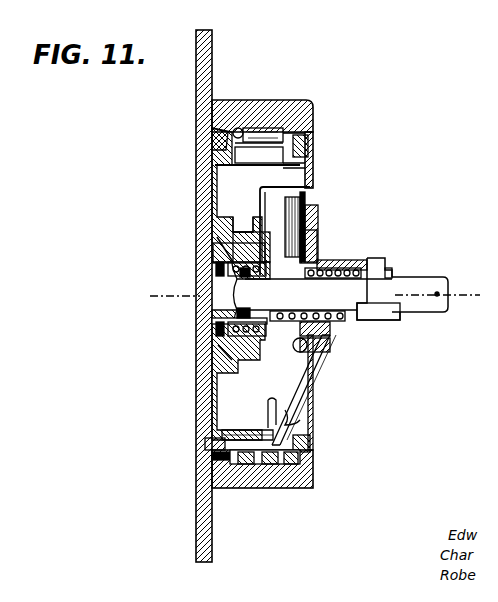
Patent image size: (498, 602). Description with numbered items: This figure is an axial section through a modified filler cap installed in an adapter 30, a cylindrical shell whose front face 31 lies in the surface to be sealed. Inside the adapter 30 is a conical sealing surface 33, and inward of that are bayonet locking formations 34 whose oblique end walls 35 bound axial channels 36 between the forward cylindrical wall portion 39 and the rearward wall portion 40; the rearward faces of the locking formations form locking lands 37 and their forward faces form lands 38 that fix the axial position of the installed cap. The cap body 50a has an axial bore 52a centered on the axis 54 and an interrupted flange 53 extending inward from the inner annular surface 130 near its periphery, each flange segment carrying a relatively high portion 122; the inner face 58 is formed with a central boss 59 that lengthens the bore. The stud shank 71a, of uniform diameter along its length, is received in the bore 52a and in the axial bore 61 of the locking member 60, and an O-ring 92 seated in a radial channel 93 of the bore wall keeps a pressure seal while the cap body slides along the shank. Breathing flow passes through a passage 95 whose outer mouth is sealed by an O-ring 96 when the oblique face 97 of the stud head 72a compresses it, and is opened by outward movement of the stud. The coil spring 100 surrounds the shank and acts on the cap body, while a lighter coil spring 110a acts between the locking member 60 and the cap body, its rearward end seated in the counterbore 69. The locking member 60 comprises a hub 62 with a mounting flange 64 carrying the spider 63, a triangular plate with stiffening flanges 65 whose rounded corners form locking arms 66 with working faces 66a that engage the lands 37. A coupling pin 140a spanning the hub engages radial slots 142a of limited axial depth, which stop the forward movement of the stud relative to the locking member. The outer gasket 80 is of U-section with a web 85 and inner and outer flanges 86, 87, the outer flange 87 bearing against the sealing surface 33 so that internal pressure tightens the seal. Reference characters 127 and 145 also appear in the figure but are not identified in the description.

The adapter 30 is at (303, 100).
The front face 31 is at (196, 95).
The annular sealing surface 33 is at (212, 138).
The locking formations 34 is at (256, 488).
The end walls 35 is at (302, 133).
The channels 36 is at (256, 128).
The lands 37 is at (276, 488).
The lands 38 is at (245, 488).
The cylindrical wall portion 39 is at (227, 488).
The cylindrical wall portion 40 is at (298, 488).
The cap body 50a is at (212, 236).
The axial bore 52a is at (282, 290).
The interrupted flange 53 is at (267, 426).
The axis 54 is at (182, 300).
The inner face 58 is at (232, 196).
The central boss 59 is at (262, 230).
The locking member 60 is at (365, 344).
The axial bore 61 is at (366, 268).
The hub portion 62 is at (393, 262).
The spider 63 is at (320, 228).
The mounting flange 64 is at (322, 246).
The stiffening flanges 65 is at (318, 210).
The bayonet locking arms 66 is at (312, 188).
The working faces 66a is at (272, 196).
The counterbore 69 is at (330, 338).
The stud shank 71a is at (340, 298).
The stud head 72a is at (212, 327).
The sealing gasket 80 is at (215, 160).
The web 85 is at (212, 456).
The inner flange 86 is at (207, 443).
The outer flange 87 is at (205, 480).
The O-ring 92 is at (248, 277).
The radial channel 93 is at (252, 300).
The breathing passage 95 is at (243, 222).
The O-ring 96 is at (213, 247).
The oblique face 97 is at (208, 368).
The coil spring 100 is at (232, 266).
The coil spring 110a is at (358, 258).
The flange portion 122 is at (300, 420).
The corner 127 is at (312, 133).
The inner annular surface 130 is at (238, 128).
The coupling pin 140a is at (412, 277).
The radial slots 142a is at (397, 312).
The hole 145 is at (418, 288).